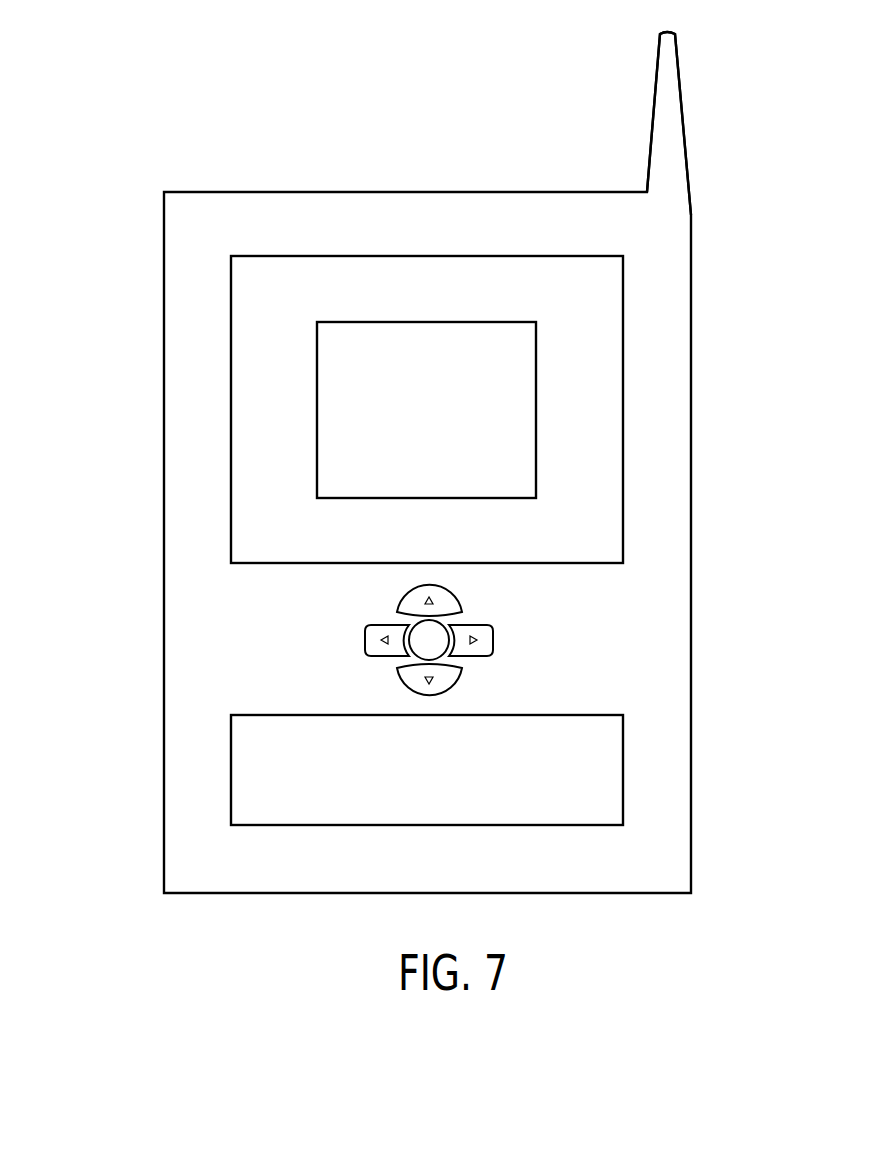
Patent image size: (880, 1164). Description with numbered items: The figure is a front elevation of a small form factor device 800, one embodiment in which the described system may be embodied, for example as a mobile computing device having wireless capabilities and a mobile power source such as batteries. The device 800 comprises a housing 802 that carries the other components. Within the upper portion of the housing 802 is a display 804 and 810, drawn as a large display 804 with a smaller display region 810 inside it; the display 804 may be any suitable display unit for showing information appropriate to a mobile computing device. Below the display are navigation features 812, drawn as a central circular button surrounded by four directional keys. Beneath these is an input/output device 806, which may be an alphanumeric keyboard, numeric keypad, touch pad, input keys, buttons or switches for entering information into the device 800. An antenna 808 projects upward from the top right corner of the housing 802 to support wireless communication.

The small form factor device 800 is at (160, 128).
The housing 802 is at (164, 632).
The display 804 is at (623, 312).
The input/output (I/O) device 806 is at (623, 770).
The antenna 808 is at (651, 112).
The display 810 is at (427, 322).
The navigation features 812 is at (534, 642).